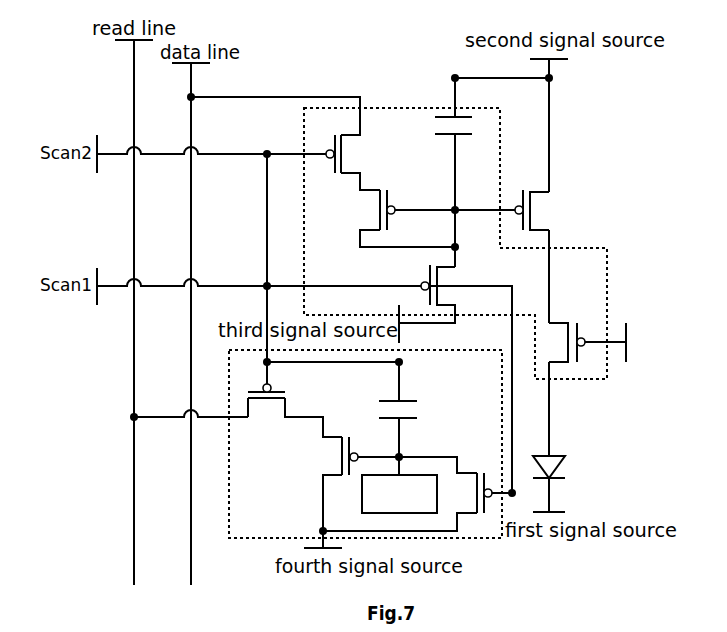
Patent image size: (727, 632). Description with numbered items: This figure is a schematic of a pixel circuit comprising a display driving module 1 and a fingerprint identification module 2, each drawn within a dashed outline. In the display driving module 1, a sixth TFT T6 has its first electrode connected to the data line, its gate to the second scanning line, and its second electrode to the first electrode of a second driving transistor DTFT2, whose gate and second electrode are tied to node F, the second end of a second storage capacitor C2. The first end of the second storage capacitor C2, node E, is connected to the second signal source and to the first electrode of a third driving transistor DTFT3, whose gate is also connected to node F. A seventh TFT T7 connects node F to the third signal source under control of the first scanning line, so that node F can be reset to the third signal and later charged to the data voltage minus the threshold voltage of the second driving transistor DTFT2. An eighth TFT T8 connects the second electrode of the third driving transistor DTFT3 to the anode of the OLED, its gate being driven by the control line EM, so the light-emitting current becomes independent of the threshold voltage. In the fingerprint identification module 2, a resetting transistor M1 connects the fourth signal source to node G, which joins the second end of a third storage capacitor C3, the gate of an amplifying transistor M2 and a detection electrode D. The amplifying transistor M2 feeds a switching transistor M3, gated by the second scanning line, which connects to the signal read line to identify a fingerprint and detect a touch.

The display driving module 1 is at (455, 216).
The fingerprint identification module 2 is at (359, 444).
The sixth TFT T6 is at (353, 162).
The second driving transistor DTFT2 is at (418, 218).
The second storage capacitor C2 is at (441, 172).
The node E is at (455, 68).
The node F is at (449, 217).
The seventh TFT T7 is at (427, 292).
The third driving transistor DTFT3 is at (552, 256).
The eighth TFT T8 is at (563, 342).
The control line EM is at (620, 342).
The element OLED is at (574, 466).
The switching transistor M3 is at (295, 410).
The amplifying transistor M2 is at (356, 484).
The third storage capacitor C3 is at (354, 416).
The node G is at (409, 446).
The resetting transistor M1 is at (417, 496).
The detection electrode D is at (399, 494).